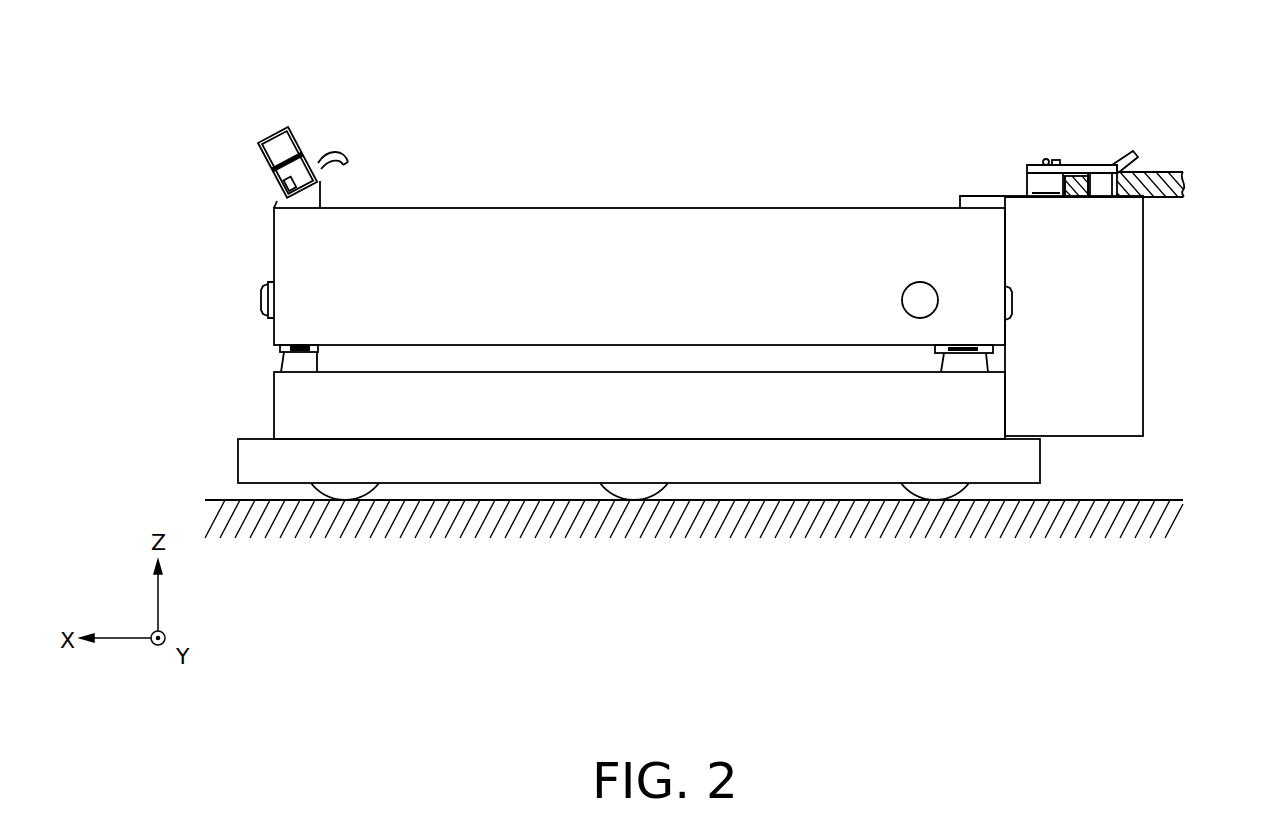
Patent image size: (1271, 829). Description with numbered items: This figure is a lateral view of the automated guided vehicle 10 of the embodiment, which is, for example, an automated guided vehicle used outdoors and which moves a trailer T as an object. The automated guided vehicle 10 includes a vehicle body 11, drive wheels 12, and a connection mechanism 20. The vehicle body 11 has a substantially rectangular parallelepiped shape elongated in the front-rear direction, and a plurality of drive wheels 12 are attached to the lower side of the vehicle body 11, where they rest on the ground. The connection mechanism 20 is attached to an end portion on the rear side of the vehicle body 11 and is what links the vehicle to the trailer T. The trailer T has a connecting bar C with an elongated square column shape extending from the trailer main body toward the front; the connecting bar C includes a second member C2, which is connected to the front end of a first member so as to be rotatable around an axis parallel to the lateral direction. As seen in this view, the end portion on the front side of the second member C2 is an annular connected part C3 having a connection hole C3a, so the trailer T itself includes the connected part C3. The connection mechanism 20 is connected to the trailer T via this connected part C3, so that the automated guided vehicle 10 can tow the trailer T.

The automated guided vehicle 10 is at (909, 110).
The vehicle body 11 is at (738, 198).
The drive wheel 12 is at (345, 495).
The connection mechanism 20 is at (1160, 292).
The connecting bar C is at (1155, 160).
The second member C2 is at (1172, 172).
The connected part C3 is at (1080, 168).
The connection hole C3a is at (1108, 173).
The trailer T is at (1178, 210).